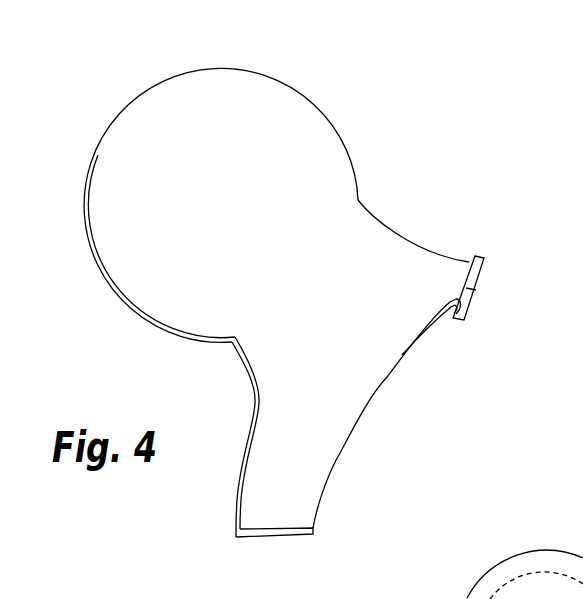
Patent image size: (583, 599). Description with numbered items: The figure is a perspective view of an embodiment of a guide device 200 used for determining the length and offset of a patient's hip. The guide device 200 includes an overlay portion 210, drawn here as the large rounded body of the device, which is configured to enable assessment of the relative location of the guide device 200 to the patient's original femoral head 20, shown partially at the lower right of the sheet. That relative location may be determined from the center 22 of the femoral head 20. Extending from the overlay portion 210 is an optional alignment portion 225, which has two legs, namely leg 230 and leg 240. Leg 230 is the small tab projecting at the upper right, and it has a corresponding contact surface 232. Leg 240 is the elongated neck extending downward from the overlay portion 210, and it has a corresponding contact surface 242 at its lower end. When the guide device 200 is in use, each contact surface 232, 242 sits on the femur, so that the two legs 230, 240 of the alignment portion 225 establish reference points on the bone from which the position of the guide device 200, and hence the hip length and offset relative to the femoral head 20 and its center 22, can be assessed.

The guide device 200 is at (112, 99).
The overlay portion 210 is at (254, 117).
The alignment portion 225 is at (373, 268).
The leg 230 is at (452, 277).
The contact surface 232 is at (478, 292).
The leg 240 is at (290, 465).
The contact surface 242 is at (281, 535).
The femoral head 20 is at (553, 587).
The center 22 is at (510, 598).